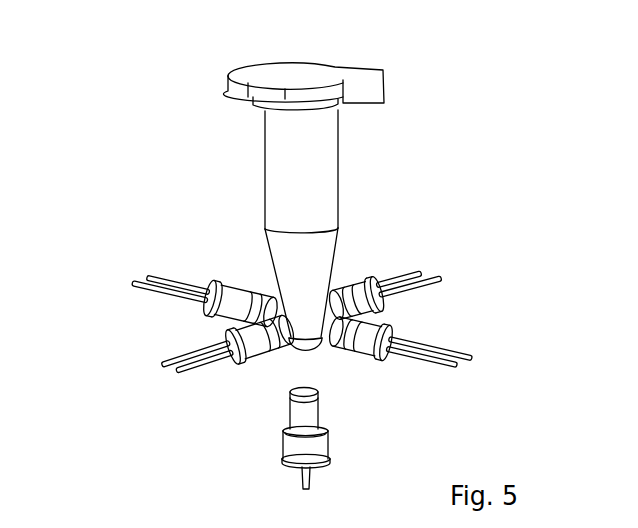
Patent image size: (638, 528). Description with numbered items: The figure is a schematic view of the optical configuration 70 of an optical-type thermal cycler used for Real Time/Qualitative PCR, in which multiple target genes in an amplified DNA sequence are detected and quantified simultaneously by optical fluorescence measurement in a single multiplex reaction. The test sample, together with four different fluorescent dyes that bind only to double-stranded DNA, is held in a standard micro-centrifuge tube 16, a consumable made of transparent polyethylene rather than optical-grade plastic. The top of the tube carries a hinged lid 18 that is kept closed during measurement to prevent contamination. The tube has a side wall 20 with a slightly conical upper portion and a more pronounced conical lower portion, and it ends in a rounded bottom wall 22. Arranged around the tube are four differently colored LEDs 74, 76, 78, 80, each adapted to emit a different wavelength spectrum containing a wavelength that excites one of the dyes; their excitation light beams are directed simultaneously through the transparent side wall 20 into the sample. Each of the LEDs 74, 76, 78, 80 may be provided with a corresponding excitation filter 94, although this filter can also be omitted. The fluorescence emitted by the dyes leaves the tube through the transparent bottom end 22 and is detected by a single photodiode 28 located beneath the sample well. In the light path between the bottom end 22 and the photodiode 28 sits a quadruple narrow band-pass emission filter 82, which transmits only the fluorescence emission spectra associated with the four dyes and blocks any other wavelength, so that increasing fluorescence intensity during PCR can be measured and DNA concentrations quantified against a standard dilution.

The optical configuration 70 is at (170, 100).
The hinged lid 18 is at (312, 77).
The micro-centrifuge tube 16 is at (305, 181).
The side wall 20 is at (310, 157).
The bottom wall or end 22 is at (307, 346).
The LED 74 is at (203, 287).
The LED 76 is at (263, 343).
The LED 78 is at (370, 280).
The LED 80 is at (363, 333).
The excitation filter 94 is at (250, 292).
The photodiode 28 is at (293, 445).
The quadruple narrow band-pass emission filter 82 is at (317, 415).